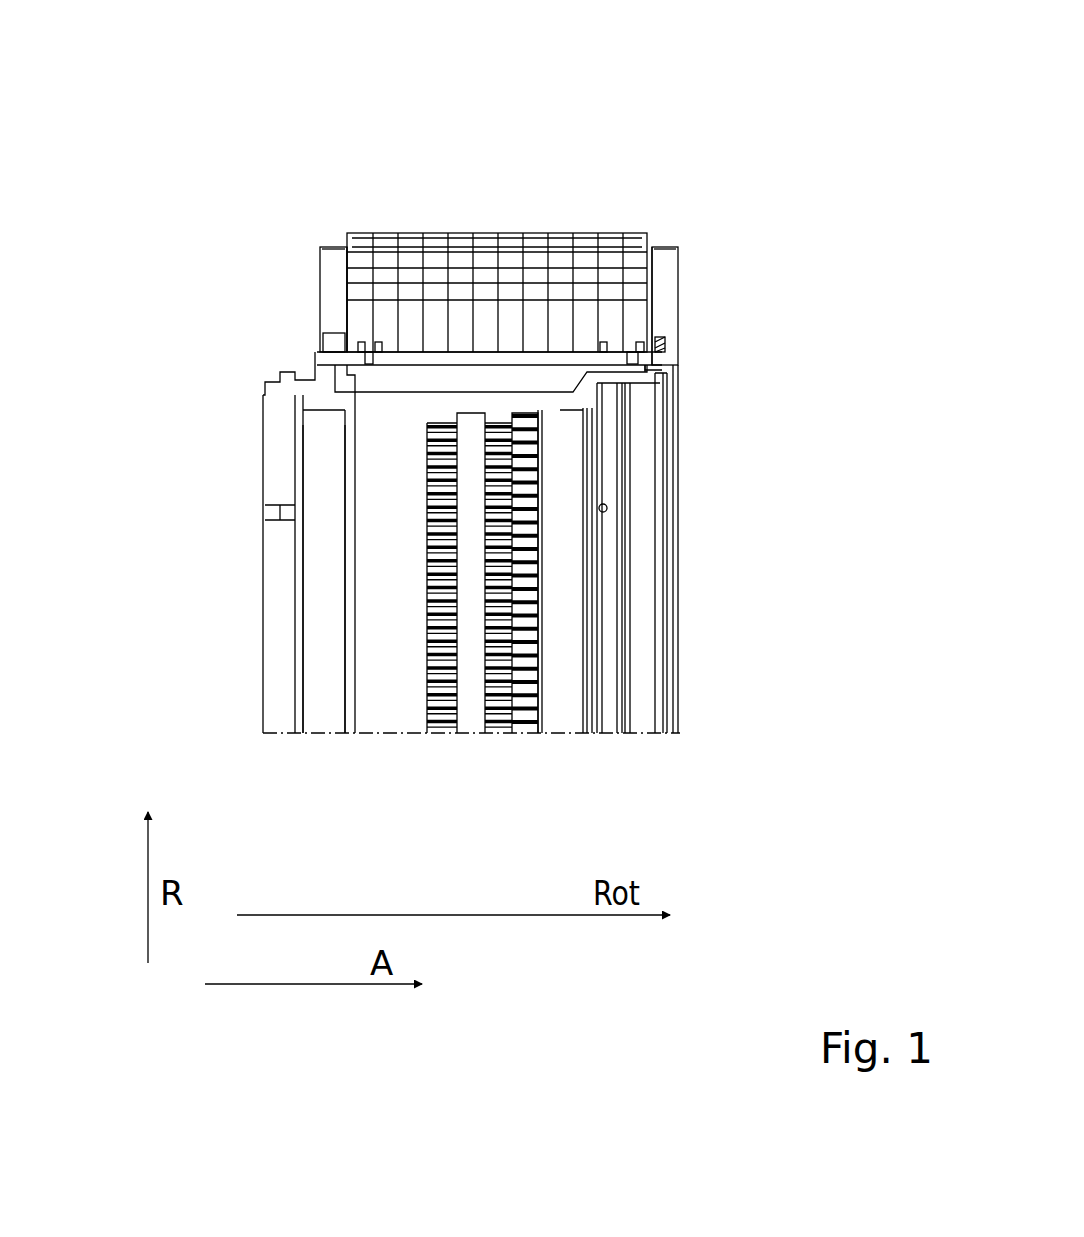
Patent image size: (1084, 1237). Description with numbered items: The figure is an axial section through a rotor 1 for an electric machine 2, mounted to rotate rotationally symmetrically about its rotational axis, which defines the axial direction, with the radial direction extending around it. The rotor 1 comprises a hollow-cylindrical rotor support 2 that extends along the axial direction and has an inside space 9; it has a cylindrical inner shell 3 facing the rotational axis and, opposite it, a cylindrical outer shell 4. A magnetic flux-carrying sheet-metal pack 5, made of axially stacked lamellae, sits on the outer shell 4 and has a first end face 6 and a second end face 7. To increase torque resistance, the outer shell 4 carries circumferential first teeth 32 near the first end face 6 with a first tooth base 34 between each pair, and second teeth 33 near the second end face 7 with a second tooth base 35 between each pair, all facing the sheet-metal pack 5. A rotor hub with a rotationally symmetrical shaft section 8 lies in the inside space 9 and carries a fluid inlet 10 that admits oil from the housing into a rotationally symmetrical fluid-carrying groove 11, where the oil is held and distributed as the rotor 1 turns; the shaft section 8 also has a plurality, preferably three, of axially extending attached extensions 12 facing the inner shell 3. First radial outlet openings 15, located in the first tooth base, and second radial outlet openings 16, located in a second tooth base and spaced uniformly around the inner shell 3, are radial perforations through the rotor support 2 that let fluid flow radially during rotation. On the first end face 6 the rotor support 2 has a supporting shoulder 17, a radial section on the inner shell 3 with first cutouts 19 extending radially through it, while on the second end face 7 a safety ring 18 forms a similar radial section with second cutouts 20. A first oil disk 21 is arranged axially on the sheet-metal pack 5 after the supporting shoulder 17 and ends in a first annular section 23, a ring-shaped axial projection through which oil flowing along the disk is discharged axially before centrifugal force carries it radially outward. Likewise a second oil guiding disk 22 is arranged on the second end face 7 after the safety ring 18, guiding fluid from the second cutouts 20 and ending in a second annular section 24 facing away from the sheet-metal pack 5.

The rotor 1 is at (232, 205).
The rotor support 2 is at (535, 360).
The inner shell 3 is at (412, 372).
The outer shell 4 is at (485, 344).
The sheet-metal pack 5 is at (460, 260).
The first end face 6 is at (662, 300).
The second end face 7 is at (337, 296).
The rotationally symmetrical shaft section 8 is at (470, 614).
The inside space 9 is at (395, 690).
The fluid inlet 10 is at (607, 510).
The rotationally symmetrical fluid-carrying groove 11 is at (565, 683).
The attached extensions 12 is at (550, 380).
The first radial outlet openings 15 is at (632, 358).
The second radial outlet openings 16 is at (366, 366).
The supporting shoulder 17 is at (666, 344).
The safety ring 18 is at (315, 366).
The first cutouts 19 is at (668, 356).
The second cutouts 20 is at (338, 343).
The first oil disk 21 is at (668, 278).
The second oil guiding disk 22 is at (332, 277).
The first annular section 23 is at (666, 242).
The second annular section 24 is at (328, 242).
The first teeth 32 is at (646, 338).
The second teeth 33 is at (360, 338).
The first tooth base 34 is at (604, 338).
The second tooth base 35 is at (386, 338).